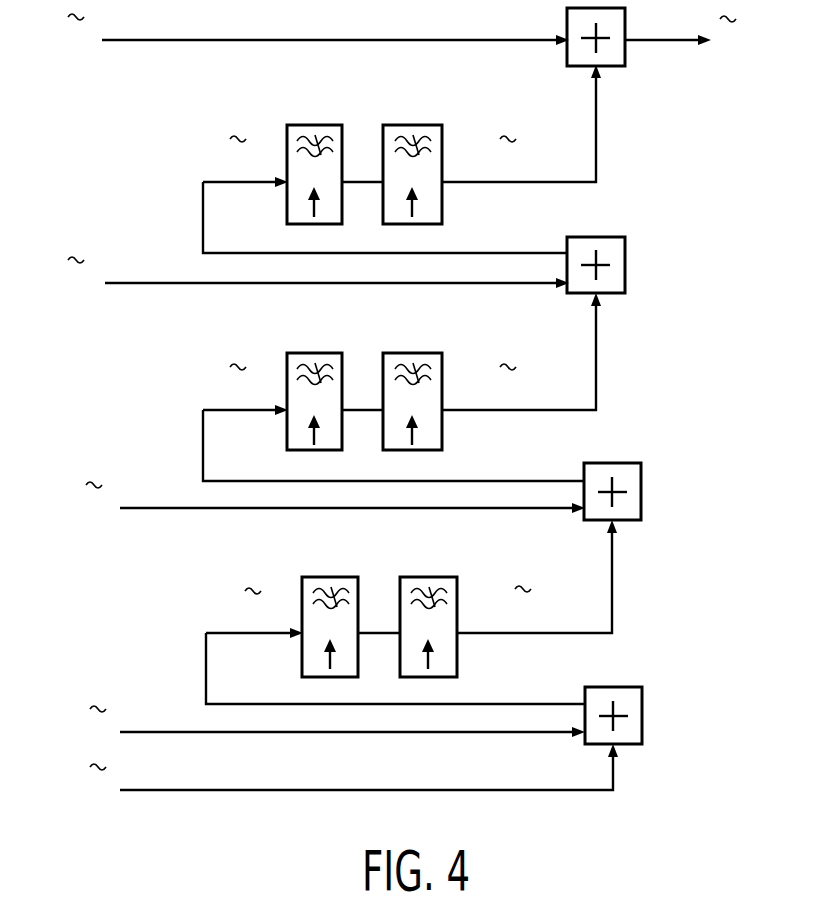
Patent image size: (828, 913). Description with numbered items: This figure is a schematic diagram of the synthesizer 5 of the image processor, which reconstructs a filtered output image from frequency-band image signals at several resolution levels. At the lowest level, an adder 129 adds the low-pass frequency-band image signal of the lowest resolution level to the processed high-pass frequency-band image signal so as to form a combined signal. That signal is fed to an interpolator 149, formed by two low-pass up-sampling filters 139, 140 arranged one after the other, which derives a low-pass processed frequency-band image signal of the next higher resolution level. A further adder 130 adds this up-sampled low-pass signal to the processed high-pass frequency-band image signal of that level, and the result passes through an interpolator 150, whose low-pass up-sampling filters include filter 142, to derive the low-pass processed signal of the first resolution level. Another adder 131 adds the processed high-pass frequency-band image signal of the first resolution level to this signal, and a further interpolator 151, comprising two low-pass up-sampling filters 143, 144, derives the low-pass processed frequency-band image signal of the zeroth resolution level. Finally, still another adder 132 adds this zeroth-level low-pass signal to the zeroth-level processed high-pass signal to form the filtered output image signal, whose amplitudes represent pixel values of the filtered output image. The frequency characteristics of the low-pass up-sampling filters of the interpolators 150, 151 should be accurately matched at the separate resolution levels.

The synthesizer 5 is at (128, 93).
The interpolator 151 is at (263, 93).
The interpolator 150 is at (263, 318).
The interpolator 149 is at (279, 545).
The low-pass up-sampling filter 143 is at (315, 125).
The low-pass up-sampling filter 144 is at (408, 125).
The low-pass up-sampling filter 142 is at (408, 353).
The low-pass up-sampling filter 139 is at (332, 577).
The low-pass up-sampling filter 140 is at (425, 577).
The adder 132 is at (615, 66).
The adder 131 is at (615, 293).
The adder 130 is at (631, 520).
The adder 129 is at (632, 744).